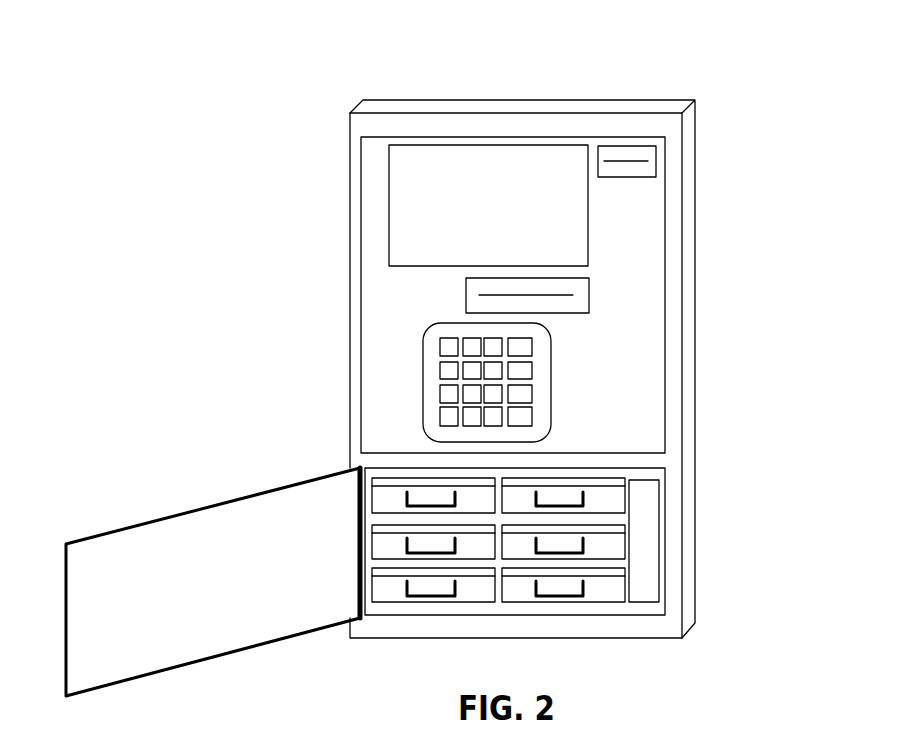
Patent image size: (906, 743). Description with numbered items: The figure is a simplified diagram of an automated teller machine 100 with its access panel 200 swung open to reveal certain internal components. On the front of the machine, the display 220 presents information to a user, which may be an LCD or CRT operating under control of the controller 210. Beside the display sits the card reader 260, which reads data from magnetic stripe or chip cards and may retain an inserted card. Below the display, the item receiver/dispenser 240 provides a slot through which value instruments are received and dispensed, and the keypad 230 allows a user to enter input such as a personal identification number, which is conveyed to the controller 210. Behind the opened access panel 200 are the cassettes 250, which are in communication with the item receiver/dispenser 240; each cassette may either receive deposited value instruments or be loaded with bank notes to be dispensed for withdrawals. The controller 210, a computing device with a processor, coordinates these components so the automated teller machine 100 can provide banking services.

The automated teller machine 100 is at (665, 102).
The access panel 200 is at (108, 561).
The controller 210 is at (643, 492).
The display 220 is at (573, 251).
The keypad 230 is at (541, 395).
The item receiver/dispenser 240 is at (578, 288).
The cassettes 250 is at (386, 497).
The card reader 260 is at (645, 167).